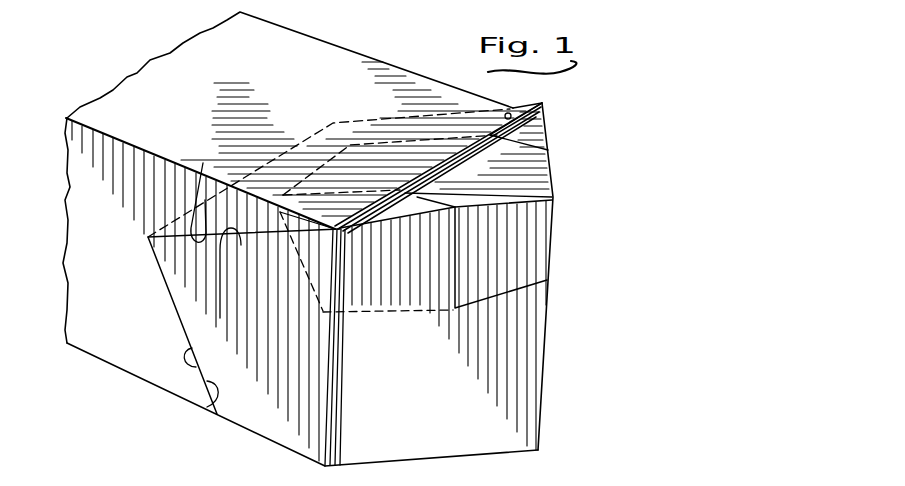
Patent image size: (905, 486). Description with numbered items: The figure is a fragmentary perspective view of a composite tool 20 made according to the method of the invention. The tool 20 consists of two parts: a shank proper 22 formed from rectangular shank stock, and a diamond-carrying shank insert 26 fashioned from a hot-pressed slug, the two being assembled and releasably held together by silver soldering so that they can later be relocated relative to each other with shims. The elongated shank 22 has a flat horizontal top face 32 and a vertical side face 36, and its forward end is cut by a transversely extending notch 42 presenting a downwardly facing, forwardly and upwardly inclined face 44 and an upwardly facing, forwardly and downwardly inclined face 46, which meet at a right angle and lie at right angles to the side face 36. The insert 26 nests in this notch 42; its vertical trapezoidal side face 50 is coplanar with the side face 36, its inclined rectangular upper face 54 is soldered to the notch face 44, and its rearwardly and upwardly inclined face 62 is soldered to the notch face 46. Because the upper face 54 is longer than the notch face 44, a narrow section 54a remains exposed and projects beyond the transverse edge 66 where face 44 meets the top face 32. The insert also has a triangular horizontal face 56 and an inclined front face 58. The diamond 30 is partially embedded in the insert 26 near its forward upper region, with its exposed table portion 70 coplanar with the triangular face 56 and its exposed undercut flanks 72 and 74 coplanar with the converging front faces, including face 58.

The composite tool 20 is at (415, 60).
The shank proper 22 is at (111, 339).
The diamond-carrying shank insert 26 is at (278, 412).
The diamond 30 is at (556, 192).
The top face 32 is at (293, 43).
The side face 36 is at (117, 162).
The notch 42 is at (164, 249).
The inclined face of notch 44 is at (203, 192).
The inclined face of notch 46 is at (216, 404).
The trapezoidal side face 50 is at (237, 410).
The upper face of insert 54 is at (224, 285).
The exposed section of upper face 54a is at (532, 114).
The triangular horizontal face 56 is at (503, 134).
The front face 58 is at (433, 445).
The rear inclined face 62 is at (196, 367).
The transverse edge 66 is at (513, 106).
The table portion 70 is at (533, 182).
The undercut flank 72 is at (530, 252).
The undercut flank 74 is at (550, 162).